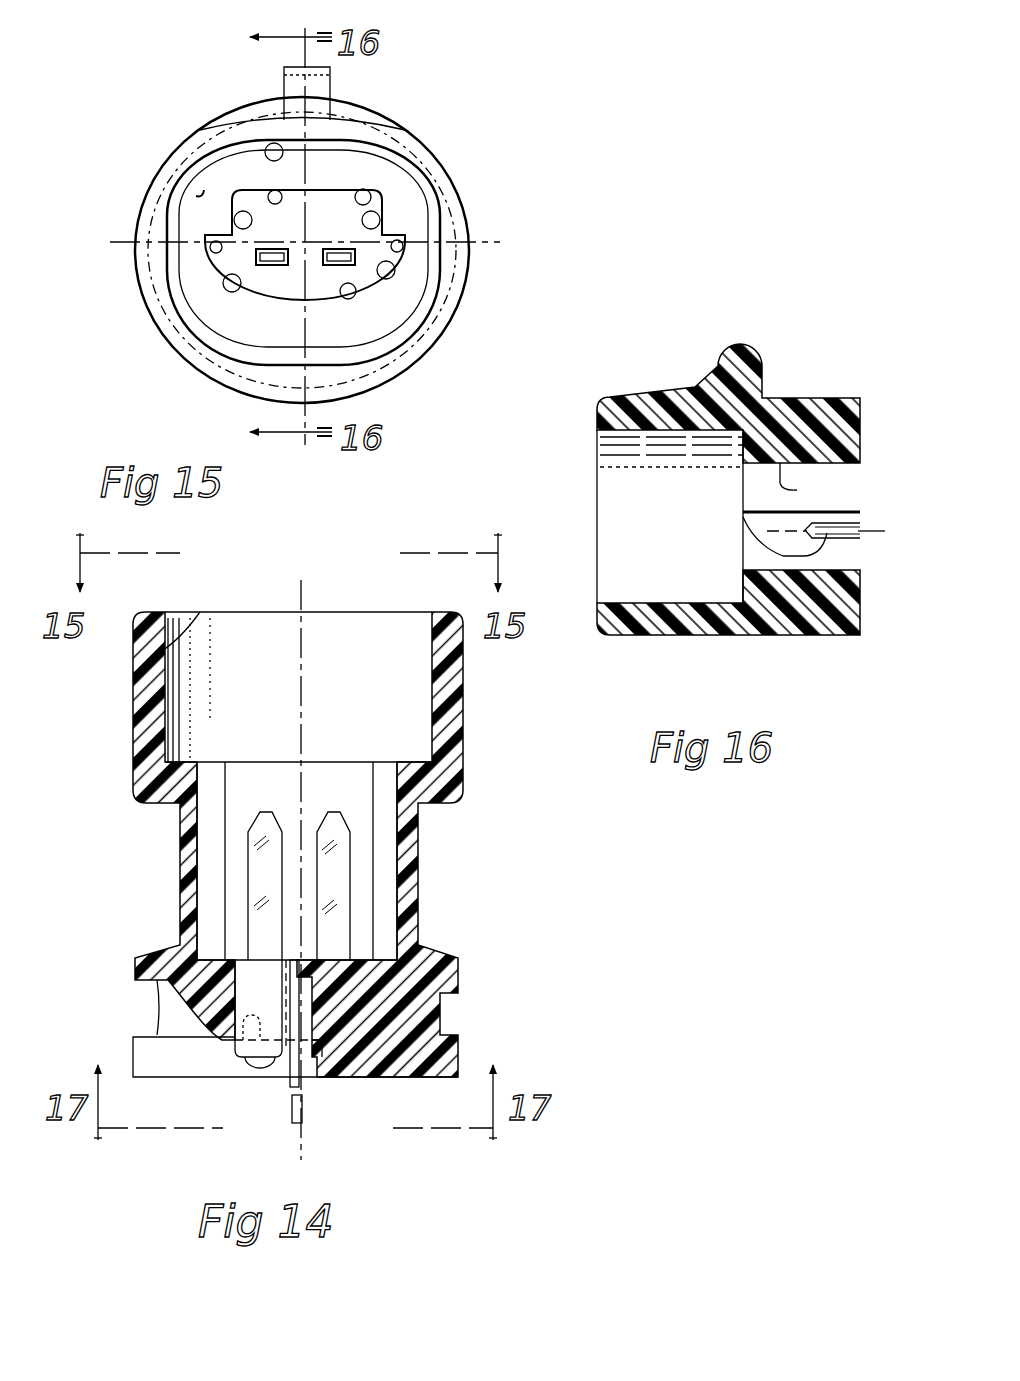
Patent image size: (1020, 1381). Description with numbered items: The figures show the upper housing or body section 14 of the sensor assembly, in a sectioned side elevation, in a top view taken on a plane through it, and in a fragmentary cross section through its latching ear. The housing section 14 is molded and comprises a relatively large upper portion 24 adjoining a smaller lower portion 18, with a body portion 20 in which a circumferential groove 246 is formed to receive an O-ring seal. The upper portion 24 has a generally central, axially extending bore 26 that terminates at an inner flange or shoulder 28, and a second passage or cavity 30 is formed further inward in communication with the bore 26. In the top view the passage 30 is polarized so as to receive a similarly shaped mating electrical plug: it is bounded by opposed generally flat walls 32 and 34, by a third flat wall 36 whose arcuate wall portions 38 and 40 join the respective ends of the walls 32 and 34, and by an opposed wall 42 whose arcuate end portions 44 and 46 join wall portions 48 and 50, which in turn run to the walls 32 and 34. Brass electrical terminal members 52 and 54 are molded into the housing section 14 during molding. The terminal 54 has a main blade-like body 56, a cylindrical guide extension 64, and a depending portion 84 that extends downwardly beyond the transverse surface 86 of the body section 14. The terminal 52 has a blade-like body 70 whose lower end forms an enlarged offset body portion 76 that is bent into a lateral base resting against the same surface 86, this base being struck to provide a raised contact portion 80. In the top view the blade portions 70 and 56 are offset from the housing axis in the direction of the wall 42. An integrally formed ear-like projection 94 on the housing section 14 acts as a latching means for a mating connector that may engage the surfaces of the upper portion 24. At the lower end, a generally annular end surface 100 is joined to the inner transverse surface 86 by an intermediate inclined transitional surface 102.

In FIG. 15, the upper housing section 14 is at (487, 163).
In FIG. 14, the upper housing section 14 is at (480, 858).
In FIG. 16, the upper housing section 14 is at (790, 305).
In FIG. 14, the lower portion 18 is at (420, 880).
In FIG. 15, the body portion 20 is at (412, 118).
In FIG. 14, the body portion 20 is at (452, 975).
In FIG. 15, the upper portion 24 is at (383, 140).
In FIG. 14, the upper portion 24 is at (466, 748).
In FIG. 16, the upper portion 24 is at (678, 637).
In FIG. 15, the bore 26 is at (272, 143).
In FIG. 14, the bore 26 is at (170, 645).
In FIG. 16, the bore 26 is at (643, 590).
In FIG. 15, the inner flange 28 is at (200, 198).
In FIG. 14, the inner flange 28 is at (190, 755).
In FIG. 16, the inner flange 28 is at (727, 585).
In FIG. 15, the passage 30 is at (318, 190).
In FIG. 14, the passage 30 is at (315, 785).
In FIG. 16, the passage 30 is at (812, 470).
In FIG. 15, the flat wall 32 is at (212, 245).
In FIG. 16, the flat wall 32 is at (758, 488).
In FIG. 15, the flat wall 34 is at (384, 214).
In FIG. 15, the third flat wall 36 is at (240, 212).
In FIG. 16, the third flat wall 36 is at (782, 475).
In FIG. 15, the arcuate wall portion 38 is at (238, 196).
In FIG. 15, the arcuate wall portion 40 is at (370, 198).
In FIG. 15, the wall 42 is at (405, 370).
In FIG. 15, the arcuate end portion 44 is at (218, 282).
In FIG. 15, the arcuate end portion 46 is at (392, 272).
In FIG. 15, the wall portion 48 is at (225, 282).
In FIG. 14, the wall portion 48 is at (210, 800).
In FIG. 16, the wall portion 48 is at (745, 520).
In FIG. 15, the wall portion 50 is at (399, 248).
In FIG. 14, the wall portion 50 is at (385, 785).
In FIG. 15, the electrical terminal member 52 is at (265, 272).
In FIG. 14, the electrical terminal member 52 is at (281, 810).
In FIG. 16, the electrical terminal member 52 is at (743, 560).
In FIG. 15, the electrical terminal member 54 is at (356, 275).
In FIG. 14, the electrical terminal member 54 is at (350, 810).
In FIG. 15, the blade-like body 56 is at (333, 268).
In FIG. 14, the guide extension 64 is at (304, 1110).
In FIG. 15, the blade-like body 70 is at (273, 268).
In FIG. 14, the offset body portion 76 is at (236, 1055).
In FIG. 14, the raised contact portion 80 is at (260, 1070).
In FIG. 14, the depending portion 84 is at (318, 1057).
In FIG. 14, the transverse surface 86 is at (365, 1078).
In FIG. 15, the ear-like projection 94 is at (284, 78).
In FIG. 16, the ear-like projection 94 is at (713, 362).
In FIG. 14, the annular end surface 100 is at (460, 1072).
In FIG. 14, the inclined transitional surface 102 is at (410, 1078).
In FIG. 14, the circumferential groove 246 is at (447, 1002).